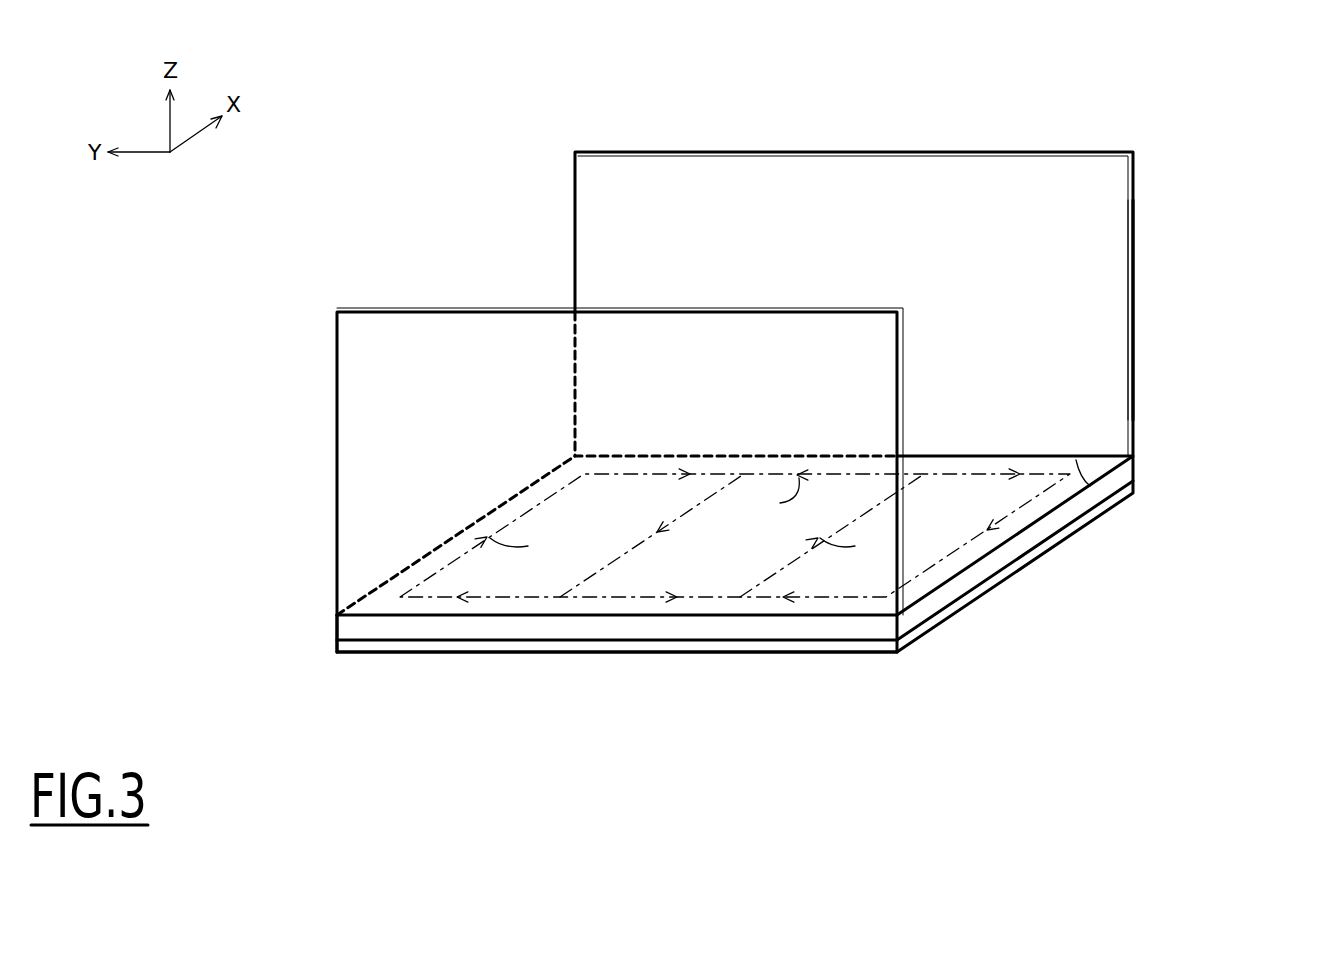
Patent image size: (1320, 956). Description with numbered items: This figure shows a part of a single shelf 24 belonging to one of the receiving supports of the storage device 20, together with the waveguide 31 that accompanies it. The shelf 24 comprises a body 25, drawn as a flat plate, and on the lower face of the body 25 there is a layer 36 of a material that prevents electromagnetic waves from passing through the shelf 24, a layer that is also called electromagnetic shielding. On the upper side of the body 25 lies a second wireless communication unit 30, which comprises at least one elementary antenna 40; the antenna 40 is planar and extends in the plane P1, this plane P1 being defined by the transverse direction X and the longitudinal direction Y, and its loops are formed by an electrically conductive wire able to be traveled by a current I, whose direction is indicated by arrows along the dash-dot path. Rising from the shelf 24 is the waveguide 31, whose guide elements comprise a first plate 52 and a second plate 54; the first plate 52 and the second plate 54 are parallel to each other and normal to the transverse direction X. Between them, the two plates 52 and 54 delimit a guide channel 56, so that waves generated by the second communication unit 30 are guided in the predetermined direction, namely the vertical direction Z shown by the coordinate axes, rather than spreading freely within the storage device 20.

The storage device 20 is at (1215, 185).
The shelf 24 is at (437, 622).
The body 25 is at (345, 624).
The second wireless communication unit 30 is at (735, 585).
The waveguide 31 is at (1003, 149).
The layer 36 is at (378, 653).
The elementary antenna 40 is at (563, 510).
The first plate 52 is at (1132, 281).
The second plate 54 is at (408, 312).
The guide channel 56 is at (1028, 329).
The plane P1 is at (1097, 462).